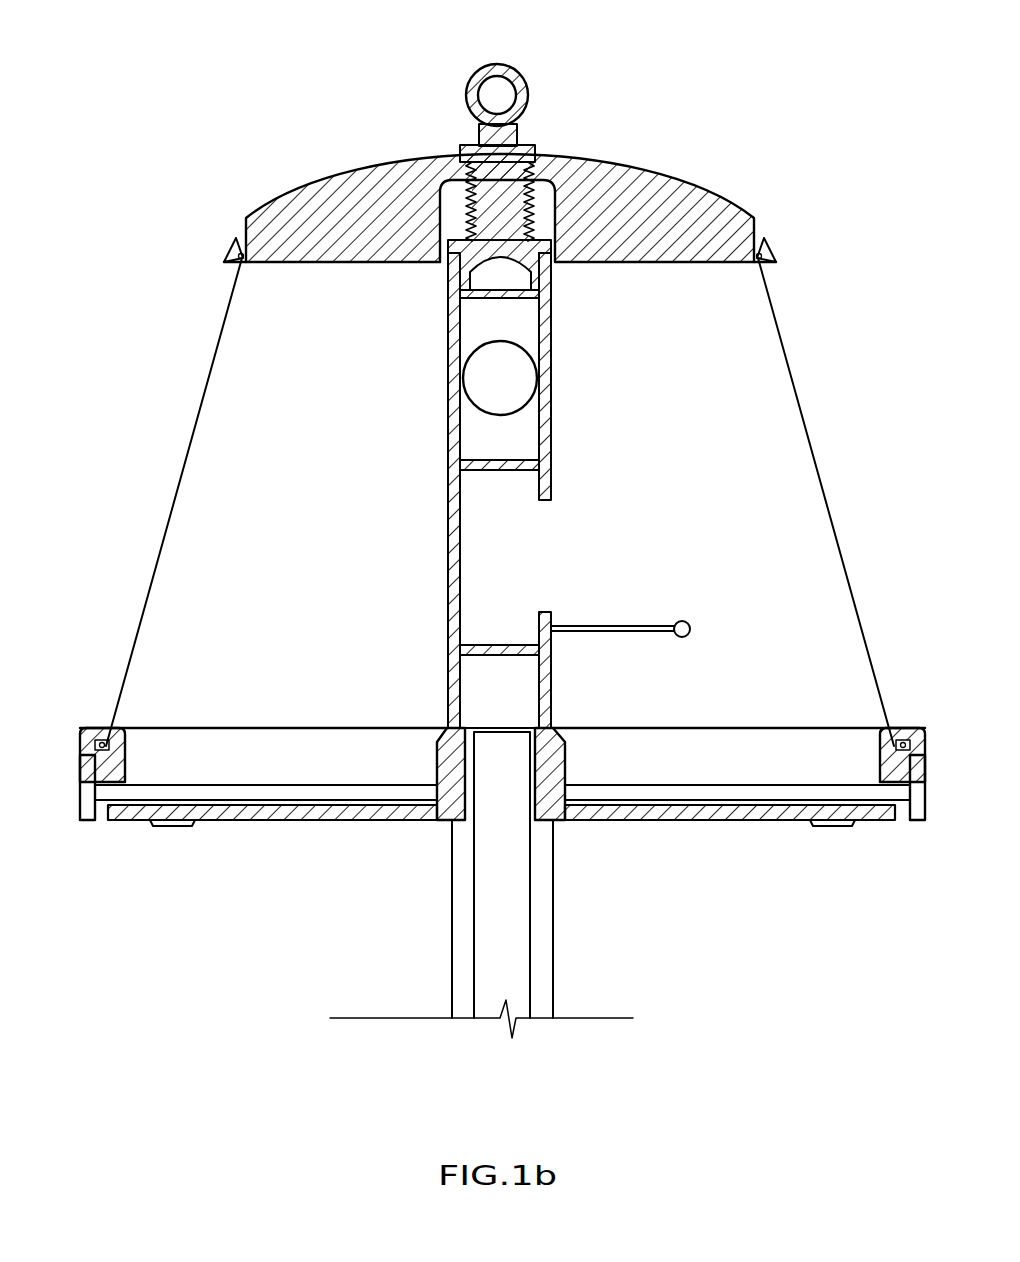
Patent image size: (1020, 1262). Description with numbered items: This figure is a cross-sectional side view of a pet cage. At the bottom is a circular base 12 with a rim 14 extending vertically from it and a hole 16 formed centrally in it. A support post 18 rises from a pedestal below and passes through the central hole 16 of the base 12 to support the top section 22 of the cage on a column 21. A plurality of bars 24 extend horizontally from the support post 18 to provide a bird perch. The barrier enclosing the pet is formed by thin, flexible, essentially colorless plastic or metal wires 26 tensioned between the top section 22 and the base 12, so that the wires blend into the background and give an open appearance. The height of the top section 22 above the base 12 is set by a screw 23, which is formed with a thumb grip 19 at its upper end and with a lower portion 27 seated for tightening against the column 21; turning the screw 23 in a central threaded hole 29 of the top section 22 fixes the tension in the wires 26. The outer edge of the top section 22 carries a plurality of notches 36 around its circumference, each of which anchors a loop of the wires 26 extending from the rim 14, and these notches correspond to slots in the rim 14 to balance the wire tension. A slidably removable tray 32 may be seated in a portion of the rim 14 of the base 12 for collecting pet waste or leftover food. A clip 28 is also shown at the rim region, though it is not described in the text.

The circular base 12 is at (275, 826).
The rim 14 is at (125, 756).
The hole 16 is at (447, 822).
The support post 18 is at (553, 886).
The thumb grip 19 is at (522, 77).
The column 21 is at (450, 484).
The top section 22 is at (708, 190).
The screw 23 is at (528, 205).
The bars 24 is at (690, 622).
The wires 26 is at (165, 512).
The lower portion 27 is at (485, 270).
The clip 28 is at (101, 728).
The central threaded hole 29 is at (462, 172).
The tray 32 is at (84, 826).
The notches 36 is at (238, 246).